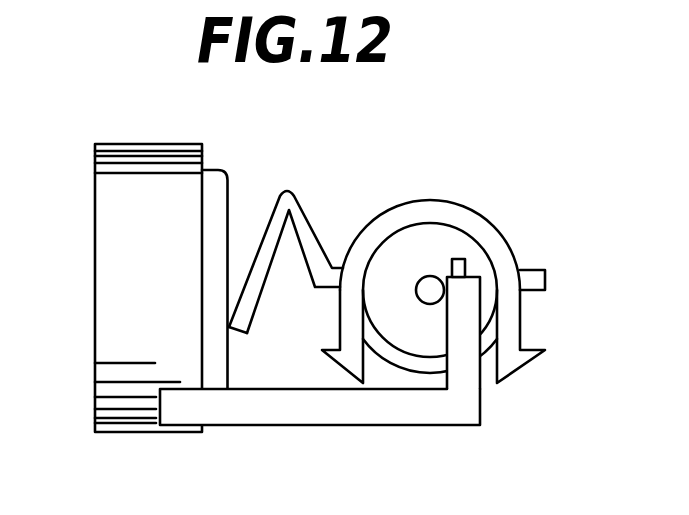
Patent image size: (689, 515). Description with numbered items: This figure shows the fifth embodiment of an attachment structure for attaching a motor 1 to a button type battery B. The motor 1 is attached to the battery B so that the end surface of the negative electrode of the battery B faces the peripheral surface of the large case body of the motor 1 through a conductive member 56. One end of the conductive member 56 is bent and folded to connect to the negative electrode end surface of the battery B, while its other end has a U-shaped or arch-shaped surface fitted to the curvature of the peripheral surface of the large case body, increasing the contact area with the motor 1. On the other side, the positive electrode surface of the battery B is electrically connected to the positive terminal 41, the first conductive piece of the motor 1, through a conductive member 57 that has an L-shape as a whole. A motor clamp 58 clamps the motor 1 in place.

The button type battery B is at (110, 313).
The motor 1 is at (434, 243).
The positive terminal 41 is at (466, 262).
The conductive member 56 is at (309, 220).
The conductive member 57 is at (322, 409).
The motor clamp 58 is at (512, 322).